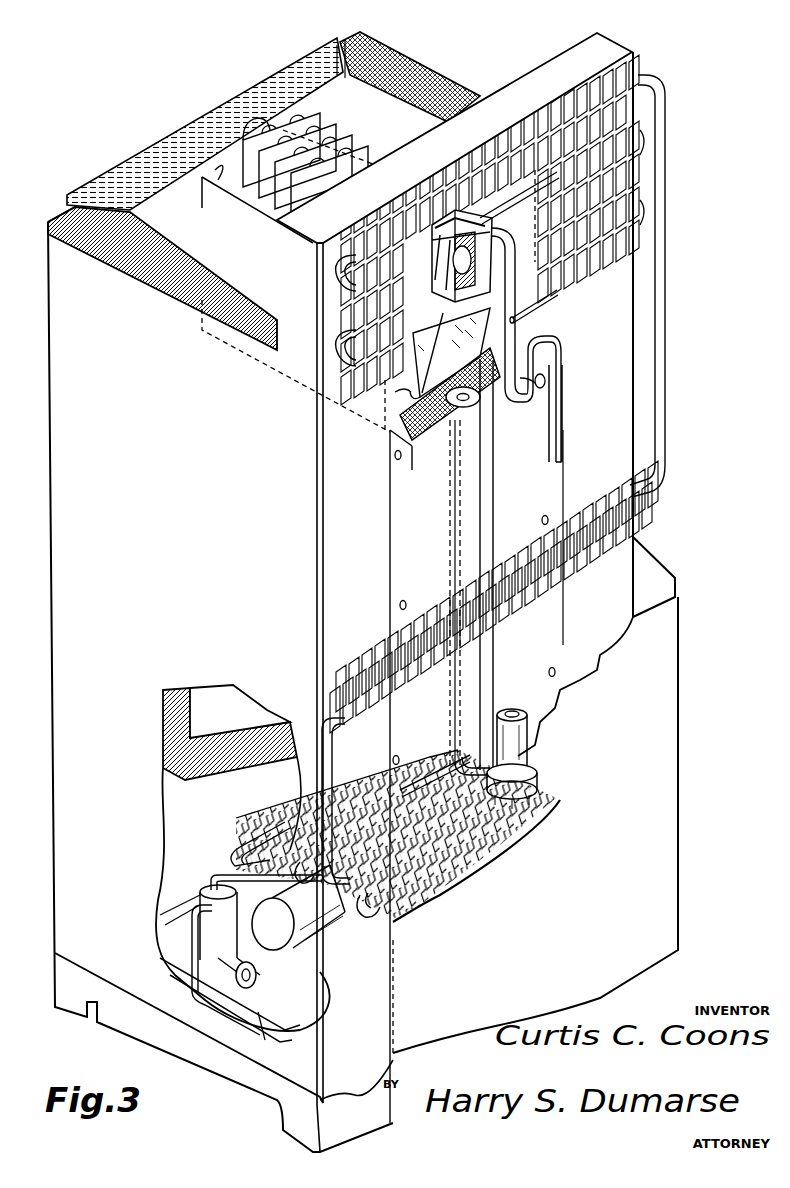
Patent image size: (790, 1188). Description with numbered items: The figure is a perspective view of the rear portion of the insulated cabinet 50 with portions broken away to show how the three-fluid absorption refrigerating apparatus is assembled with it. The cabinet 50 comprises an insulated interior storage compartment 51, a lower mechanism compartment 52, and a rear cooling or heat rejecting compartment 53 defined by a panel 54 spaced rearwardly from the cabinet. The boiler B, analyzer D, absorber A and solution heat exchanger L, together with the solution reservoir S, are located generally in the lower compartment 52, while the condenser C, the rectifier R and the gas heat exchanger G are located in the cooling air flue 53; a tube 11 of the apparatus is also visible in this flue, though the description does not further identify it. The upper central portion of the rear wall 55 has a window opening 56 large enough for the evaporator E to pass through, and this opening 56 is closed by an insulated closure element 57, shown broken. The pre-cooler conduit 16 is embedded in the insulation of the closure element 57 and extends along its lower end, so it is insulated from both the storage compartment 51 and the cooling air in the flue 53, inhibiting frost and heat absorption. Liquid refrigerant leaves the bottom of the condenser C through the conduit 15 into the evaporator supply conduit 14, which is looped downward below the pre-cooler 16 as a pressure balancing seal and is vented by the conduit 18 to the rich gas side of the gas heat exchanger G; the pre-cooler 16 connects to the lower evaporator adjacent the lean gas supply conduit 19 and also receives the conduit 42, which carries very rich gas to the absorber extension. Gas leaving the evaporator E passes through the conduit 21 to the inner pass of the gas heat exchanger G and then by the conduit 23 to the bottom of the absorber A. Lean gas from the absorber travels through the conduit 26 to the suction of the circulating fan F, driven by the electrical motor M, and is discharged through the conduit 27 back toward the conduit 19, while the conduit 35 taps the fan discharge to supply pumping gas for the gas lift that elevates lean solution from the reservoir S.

The refrigerant tube 11 is at (667, 427).
The evaporator supply conduit 14 is at (518, 325).
The conduit 15 is at (514, 318).
The pre-cooler conduit 16 is at (546, 383).
The conduit 18 is at (507, 258).
The lean gas supply conduit 19 is at (431, 357).
The conduit 21 is at (452, 215).
The conduit 23 is at (432, 785).
The conduit 26 is at (537, 798).
The conduit 27 is at (471, 760).
The conduit 35 is at (525, 820).
The conduit 42 is at (562, 427).
The insulated cabinet 50 is at (220, 679).
The interior storage compartment 51 is at (230, 732).
The lower mechanism compartment 52 is at (243, 894).
The rear cooling compartment 53 is at (575, 686).
The panel 54 is at (535, 552).
The rear wall 55 is at (390, 433).
The window opening 56 is at (402, 392).
The insulated closure element 57 is at (386, 450).
The absorber A is at (455, 872).
The boiler B is at (210, 965).
The condenser C is at (338, 296).
The analyzer D is at (261, 931).
The evaporator E is at (202, 330).
The circulating fan F is at (537, 762).
The gas heat exchanger G is at (448, 512).
The solution heat exchanger L is at (230, 1005).
The electrical motor M is at (521, 714).
The rectifier R is at (545, 585).
The solution reservoir S is at (298, 907).